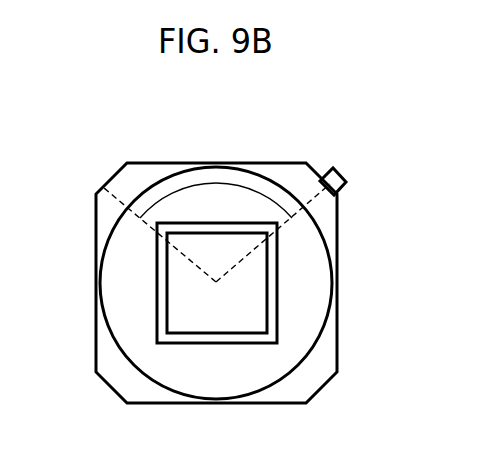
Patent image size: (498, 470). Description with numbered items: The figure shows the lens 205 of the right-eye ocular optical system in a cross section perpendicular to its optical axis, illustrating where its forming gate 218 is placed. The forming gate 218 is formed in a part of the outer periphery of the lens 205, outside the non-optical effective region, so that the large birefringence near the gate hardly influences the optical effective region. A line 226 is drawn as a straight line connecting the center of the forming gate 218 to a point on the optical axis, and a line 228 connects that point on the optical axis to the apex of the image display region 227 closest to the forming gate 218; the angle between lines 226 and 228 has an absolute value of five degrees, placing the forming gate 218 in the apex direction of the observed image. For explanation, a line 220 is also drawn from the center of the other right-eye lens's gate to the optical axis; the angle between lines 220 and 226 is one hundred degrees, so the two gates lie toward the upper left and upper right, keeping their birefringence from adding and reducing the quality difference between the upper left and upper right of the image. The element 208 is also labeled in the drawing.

The lens 205 is at (96, 333).
The image sensor 208 is at (278, 305).
The forming gate 218 is at (340, 170).
The line 220 is at (118, 197).
The line 226 is at (304, 198).
The image display region 227 is at (268, 265).
The line 228 is at (241, 259).